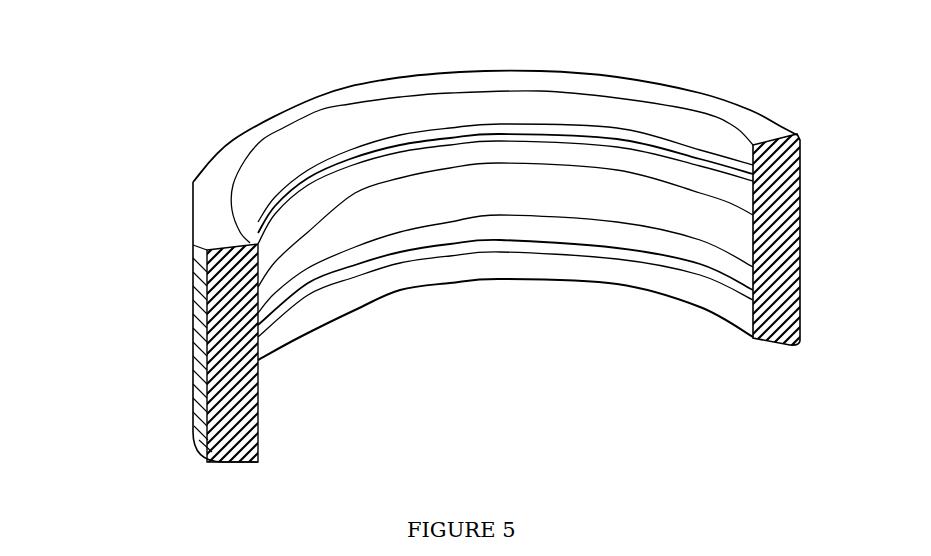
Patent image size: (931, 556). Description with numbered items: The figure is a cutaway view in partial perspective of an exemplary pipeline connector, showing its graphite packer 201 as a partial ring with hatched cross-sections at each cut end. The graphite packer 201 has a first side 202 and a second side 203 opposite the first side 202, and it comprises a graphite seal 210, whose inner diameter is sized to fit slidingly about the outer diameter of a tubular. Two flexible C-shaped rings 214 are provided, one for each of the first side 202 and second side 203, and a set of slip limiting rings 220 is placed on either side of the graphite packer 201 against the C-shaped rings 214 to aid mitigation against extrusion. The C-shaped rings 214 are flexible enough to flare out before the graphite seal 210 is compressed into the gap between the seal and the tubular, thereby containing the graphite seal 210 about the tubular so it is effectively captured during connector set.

The graphite packer 201 is at (277, 64).
The first side 202 is at (397, 73).
The second side 203 is at (410, 297).
The graphite seal 210 is at (478, 193).
The flexible C-shaped ring 214 is at (200, 188).
The slip limiting ring 220 is at (198, 420).